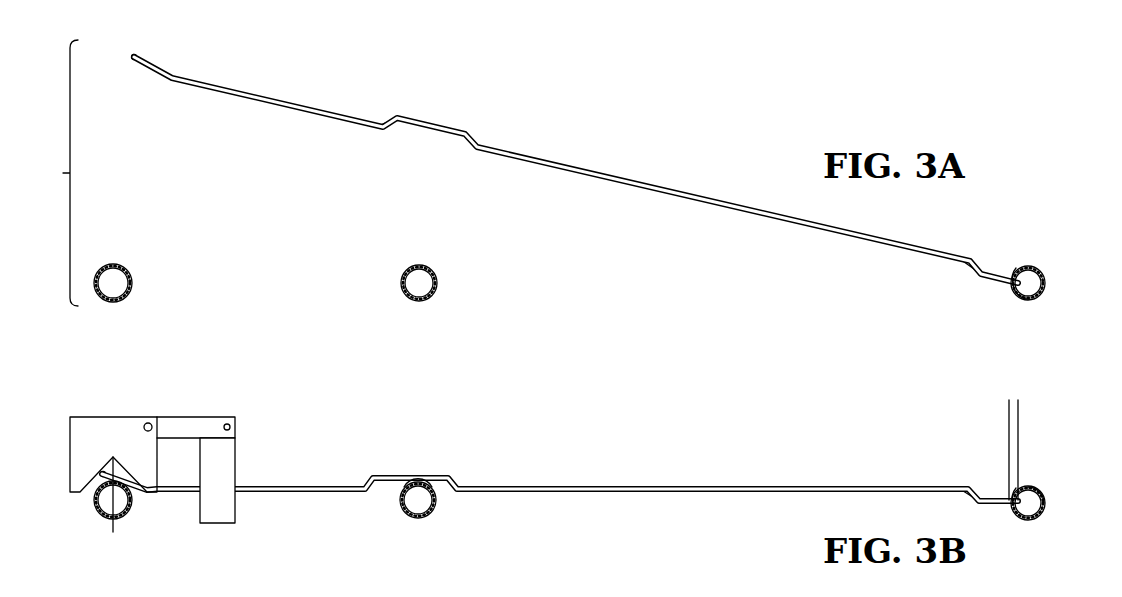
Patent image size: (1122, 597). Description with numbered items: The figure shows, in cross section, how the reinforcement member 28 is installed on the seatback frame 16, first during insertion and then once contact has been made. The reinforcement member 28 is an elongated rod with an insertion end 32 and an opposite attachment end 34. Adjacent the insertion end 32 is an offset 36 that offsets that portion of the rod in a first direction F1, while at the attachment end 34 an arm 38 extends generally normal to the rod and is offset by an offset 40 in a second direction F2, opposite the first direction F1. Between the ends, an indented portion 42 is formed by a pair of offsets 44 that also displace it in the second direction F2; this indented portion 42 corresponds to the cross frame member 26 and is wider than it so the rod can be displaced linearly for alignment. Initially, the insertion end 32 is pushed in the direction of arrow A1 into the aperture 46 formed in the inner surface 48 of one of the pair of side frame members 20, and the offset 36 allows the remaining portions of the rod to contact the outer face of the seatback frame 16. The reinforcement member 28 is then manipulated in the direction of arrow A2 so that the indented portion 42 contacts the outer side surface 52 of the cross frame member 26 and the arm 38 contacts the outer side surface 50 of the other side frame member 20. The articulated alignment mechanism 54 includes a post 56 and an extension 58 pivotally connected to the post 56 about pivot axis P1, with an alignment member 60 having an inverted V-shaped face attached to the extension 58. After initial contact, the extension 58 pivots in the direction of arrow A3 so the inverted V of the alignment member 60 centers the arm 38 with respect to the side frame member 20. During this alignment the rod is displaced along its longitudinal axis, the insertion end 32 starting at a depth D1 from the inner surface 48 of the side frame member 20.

In FIG. 3A, the seatback frame 16 is at (58, 173).
In FIG. 3A, the side frame member 20 is at (120, 285).
In FIG. 3B, the side frame member 20 is at (107, 517).
In FIG. 3B, the cross frame member 26 is at (431, 513).
In FIG. 3A, the reinforcement member 28 is at (667, 162).
In FIG. 3B, the reinforcement member 28 is at (643, 478).
In FIG. 3A, the insertion end 32 is at (1028, 300).
In FIG. 3B, the insertion end 32 is at (1028, 495).
In FIG. 3A, the attachment end 34 is at (142, 70).
In FIG. 3A, the offset 36 is at (975, 271).
In FIG. 3B, the offset 36 is at (980, 490).
In FIG. 3A, the arm 38 is at (131, 55).
In FIG. 3B, the arm 38 is at (101, 477).
In FIG. 3A, the offset 40 is at (178, 75).
In FIG. 3A, the indented portion 42 is at (422, 117).
In FIG. 3B, the indented portion 42 is at (406, 477).
In FIG. 3A, the offsets 44 is at (385, 118).
In FIG. 3B, the offsets 44 is at (366, 481).
In FIG. 3A, the aperture 46 is at (1010, 288).
In FIG. 3B, the aperture 46 is at (1011, 517).
In FIG. 3A, the inner surface 48 is at (1012, 268).
In FIG. 3B, the inner surface 48 is at (1015, 518).
In FIG. 3A, the outer side surface 50 is at (117, 265).
In FIG. 3B, the outer side surface 50 is at (128, 509).
In FIG. 3A, the outer side surface 52 is at (423, 266).
In FIG. 3B, the outer side surface 52 is at (426, 483).
In FIG. 3B, the articulated alignment mechanism 54 is at (248, 409).
In FIG. 3B, the post 56 is at (237, 510).
In FIG. 3B, the extension 58 is at (173, 417).
In FIG. 3B, the alignment member 60 is at (93, 428).
In FIG. 3B, the pivot axis P1 is at (230, 427).
In FIG. 3B, the depth D1 is at (975, 411).
In FIG. 3A, the first direction F1 is at (972, 254).
In FIG. 3B, the first direction F1 is at (1075, 500).
In FIG. 3A, the second direction F2 is at (164, 22).
In FIG. 3B, the second direction F2 is at (42, 423).
In FIG. 3A, the arrow A1 is at (774, 181).
In FIG. 3A, the arrow A2 is at (350, 42).
In FIG. 3B, the arrow A3 is at (288, 375).